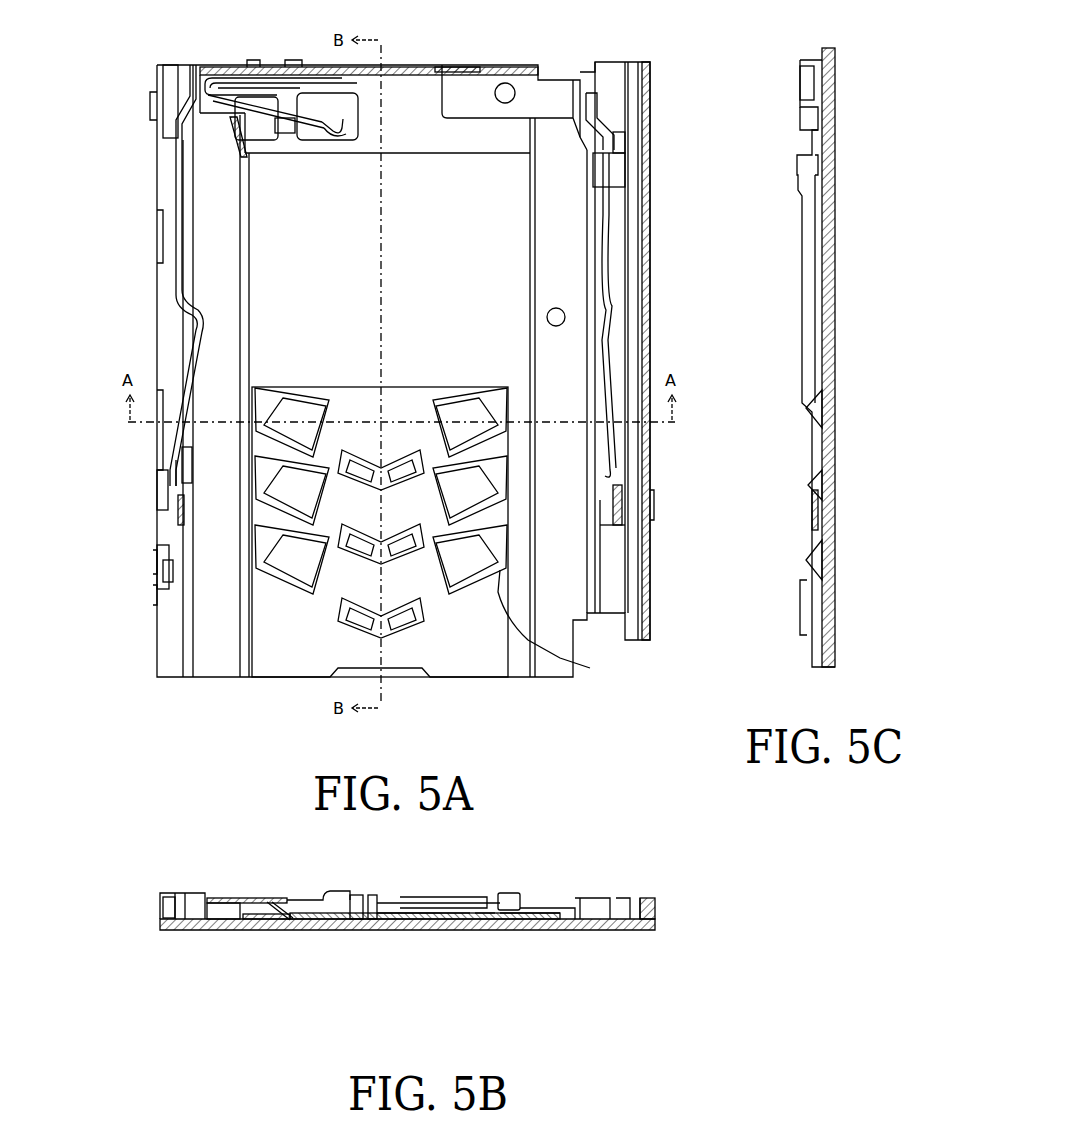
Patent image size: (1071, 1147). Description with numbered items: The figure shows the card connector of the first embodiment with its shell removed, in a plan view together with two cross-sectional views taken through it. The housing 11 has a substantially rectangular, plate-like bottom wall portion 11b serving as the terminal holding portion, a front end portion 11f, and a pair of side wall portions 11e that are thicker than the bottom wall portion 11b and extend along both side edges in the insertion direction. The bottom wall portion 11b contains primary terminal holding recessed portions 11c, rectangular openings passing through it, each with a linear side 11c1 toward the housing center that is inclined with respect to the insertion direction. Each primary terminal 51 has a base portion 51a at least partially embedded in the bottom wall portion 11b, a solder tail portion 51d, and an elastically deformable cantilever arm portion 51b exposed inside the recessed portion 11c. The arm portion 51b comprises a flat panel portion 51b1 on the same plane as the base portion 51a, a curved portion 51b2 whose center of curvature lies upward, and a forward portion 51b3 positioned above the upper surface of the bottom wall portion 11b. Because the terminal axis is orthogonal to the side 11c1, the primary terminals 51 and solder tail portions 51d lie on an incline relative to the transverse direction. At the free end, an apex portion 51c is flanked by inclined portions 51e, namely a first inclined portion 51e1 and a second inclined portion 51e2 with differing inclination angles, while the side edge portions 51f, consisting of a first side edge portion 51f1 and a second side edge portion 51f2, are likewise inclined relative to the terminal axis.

In FIG. 5A, the housing 11 is at (610, 63).
In FIG. 5A, the bottom wall portion 11b is at (285, 676).
In FIG. 5C, the bottom wall portion 11b is at (822, 345).
In FIG. 5B, the bottom wall portion 11b is at (375, 933).
In FIG. 5A, the primary terminal holding recessed portion 11c is at (523, 655).
In FIG. 5B, the primary terminal holding recessed portion 11c is at (285, 934).
In FIG. 5A, the linear side 11c1 is at (445, 452).
In FIG. 5A, the side wall portion 11e is at (652, 168).
In FIG. 5A, the front end portion 11f is at (512, 67).
In FIG. 5A, the primary terminal 51 is at (455, 600).
In FIG. 5B, the base portion 51a is at (416, 933).
In FIG. 5B, the arm portion 51b is at (515, 972).
In FIG. 5B, the flat panel portion 51b1 is at (460, 934).
In FIG. 5B, the curved portion 51b2 is at (490, 934).
In FIG. 5B, the forward portion 51b3 is at (547, 958).
In FIG. 5A, the apex portion 51c is at (562, 626).
In FIG. 5C, the apex portion 51c is at (810, 412).
In FIG. 5B, the apex portion 51c is at (514, 893).
In FIG. 5A, the solder tail portion 51d is at (400, 640).
In FIG. 5A, the inclined portion 51e is at (137, 575).
In FIG. 5C, the inclined portion 51e is at (757, 521).
In FIG. 5B, the inclined portion 51e is at (482, 905).
In FIG. 5A, the first inclined portion 51e1 is at (240, 582).
In FIG. 5C, the first inclined portion 51e1 is at (812, 520).
In FIG. 5A, the second inclined portion 51e2 is at (240, 548).
In FIG. 5C, the second inclined portion 51e2 is at (810, 484).
In FIG. 5A, the side edge portion 51f is at (149, 296).
In FIG. 5A, the first side edge portion 51f1 is at (240, 528).
In FIG. 5A, the second side edge portion 51f2 is at (260, 458).